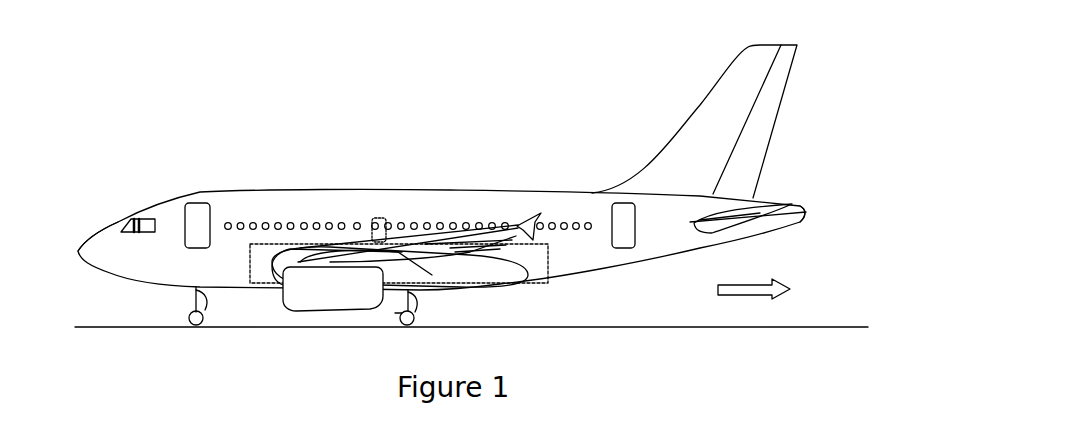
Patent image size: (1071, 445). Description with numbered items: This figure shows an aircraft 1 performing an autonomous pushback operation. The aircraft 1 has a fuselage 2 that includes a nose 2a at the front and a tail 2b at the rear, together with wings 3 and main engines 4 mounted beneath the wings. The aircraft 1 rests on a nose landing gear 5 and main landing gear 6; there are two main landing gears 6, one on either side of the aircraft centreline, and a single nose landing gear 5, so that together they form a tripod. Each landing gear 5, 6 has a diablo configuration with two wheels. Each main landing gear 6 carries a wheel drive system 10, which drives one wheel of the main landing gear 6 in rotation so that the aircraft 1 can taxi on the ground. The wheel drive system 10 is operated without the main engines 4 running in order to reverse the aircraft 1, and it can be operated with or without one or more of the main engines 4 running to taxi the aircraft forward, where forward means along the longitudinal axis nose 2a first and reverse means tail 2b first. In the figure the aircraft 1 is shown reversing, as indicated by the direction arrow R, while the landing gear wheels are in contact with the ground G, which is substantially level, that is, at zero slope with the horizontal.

The aircraft 1 is at (172, 165).
The fuselage 2 is at (442, 198).
The nose 2a is at (96, 248).
The tail 2b is at (790, 216).
The wings 3 is at (423, 236).
The main engines 4 is at (320, 300).
The nose landing gear 5 is at (198, 302).
The main landing gear 6 is at (412, 322).
The wheel drive system 10 is at (392, 314).
The ground G is at (647, 328).
The direction arrow R is at (754, 301).